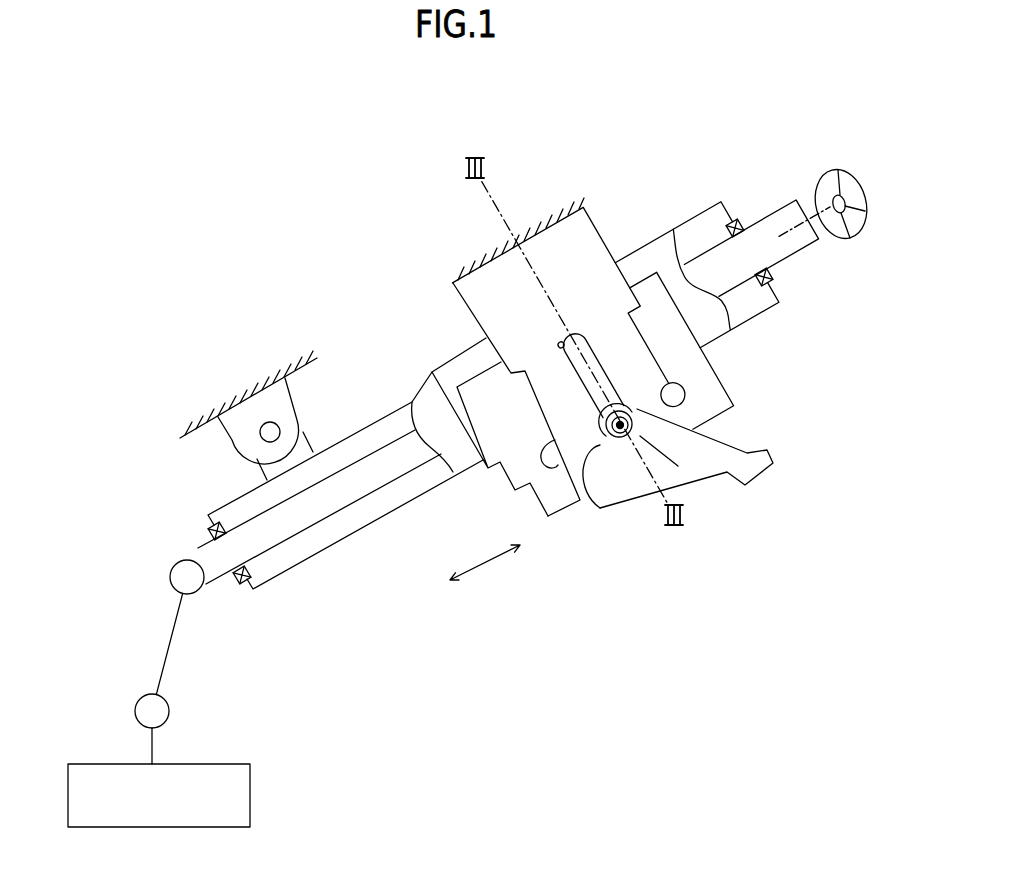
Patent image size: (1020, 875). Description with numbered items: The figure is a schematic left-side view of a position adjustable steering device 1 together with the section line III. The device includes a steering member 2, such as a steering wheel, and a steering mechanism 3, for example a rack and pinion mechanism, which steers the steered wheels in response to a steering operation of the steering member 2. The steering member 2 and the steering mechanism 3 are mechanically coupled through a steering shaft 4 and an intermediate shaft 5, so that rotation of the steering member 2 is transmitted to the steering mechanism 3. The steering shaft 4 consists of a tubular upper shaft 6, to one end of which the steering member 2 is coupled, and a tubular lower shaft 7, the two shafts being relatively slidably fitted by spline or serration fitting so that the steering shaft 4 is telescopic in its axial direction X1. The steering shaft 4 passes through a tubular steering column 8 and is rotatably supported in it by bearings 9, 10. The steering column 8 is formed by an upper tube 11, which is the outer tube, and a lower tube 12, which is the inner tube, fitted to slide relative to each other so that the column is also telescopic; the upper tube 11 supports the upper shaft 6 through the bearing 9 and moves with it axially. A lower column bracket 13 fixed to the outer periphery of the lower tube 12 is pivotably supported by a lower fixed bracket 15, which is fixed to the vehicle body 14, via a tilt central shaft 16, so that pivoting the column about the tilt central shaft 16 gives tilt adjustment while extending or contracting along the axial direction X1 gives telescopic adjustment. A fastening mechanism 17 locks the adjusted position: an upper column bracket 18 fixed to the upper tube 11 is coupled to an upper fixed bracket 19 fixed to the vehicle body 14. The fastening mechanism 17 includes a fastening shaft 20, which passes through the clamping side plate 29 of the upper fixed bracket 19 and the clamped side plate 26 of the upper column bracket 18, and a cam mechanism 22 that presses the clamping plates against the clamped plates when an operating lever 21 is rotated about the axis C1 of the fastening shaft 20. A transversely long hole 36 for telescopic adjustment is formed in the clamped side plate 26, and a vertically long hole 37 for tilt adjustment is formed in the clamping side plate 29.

The position adjustable steering device 1 is at (257, 278).
The steering member 2 is at (830, 172).
The steering mechanism 3 is at (253, 806).
The steering shaft 4 is at (738, 211).
The intermediate shaft 5 is at (172, 652).
The upper shaft 6 is at (805, 245).
The lower shaft 7 is at (330, 500).
The steering column 8 is at (764, 339).
The bearing 9 is at (772, 285).
The bearing 10 is at (242, 585).
The upper tube 11 is at (648, 250).
The lower tube 12 is at (388, 412).
The lower column bracket 13 is at (262, 472).
The vehicle body 14 is at (456, 268).
The lower fixed bracket 15 is at (233, 440).
The tilt central shaft 16 is at (276, 430).
The fastening mechanism 17 is at (635, 464).
The upper column bracket 18 is at (744, 400).
The upper fixed bracket 19 is at (590, 205).
The fastening shaft 20 is at (588, 453).
The operating lever 21 is at (716, 440).
The cam mechanism 22 is at (563, 462).
The clamped side plate 26 is at (533, 495).
The clamping side plate 29 is at (549, 255).
The transversely long hole 36 is at (558, 468).
The vertically long hole 37 is at (559, 342).
The axis of the fastening shaft C1 is at (619, 425).
The axial direction X1 is at (486, 566).
The section line III is at (574, 341).